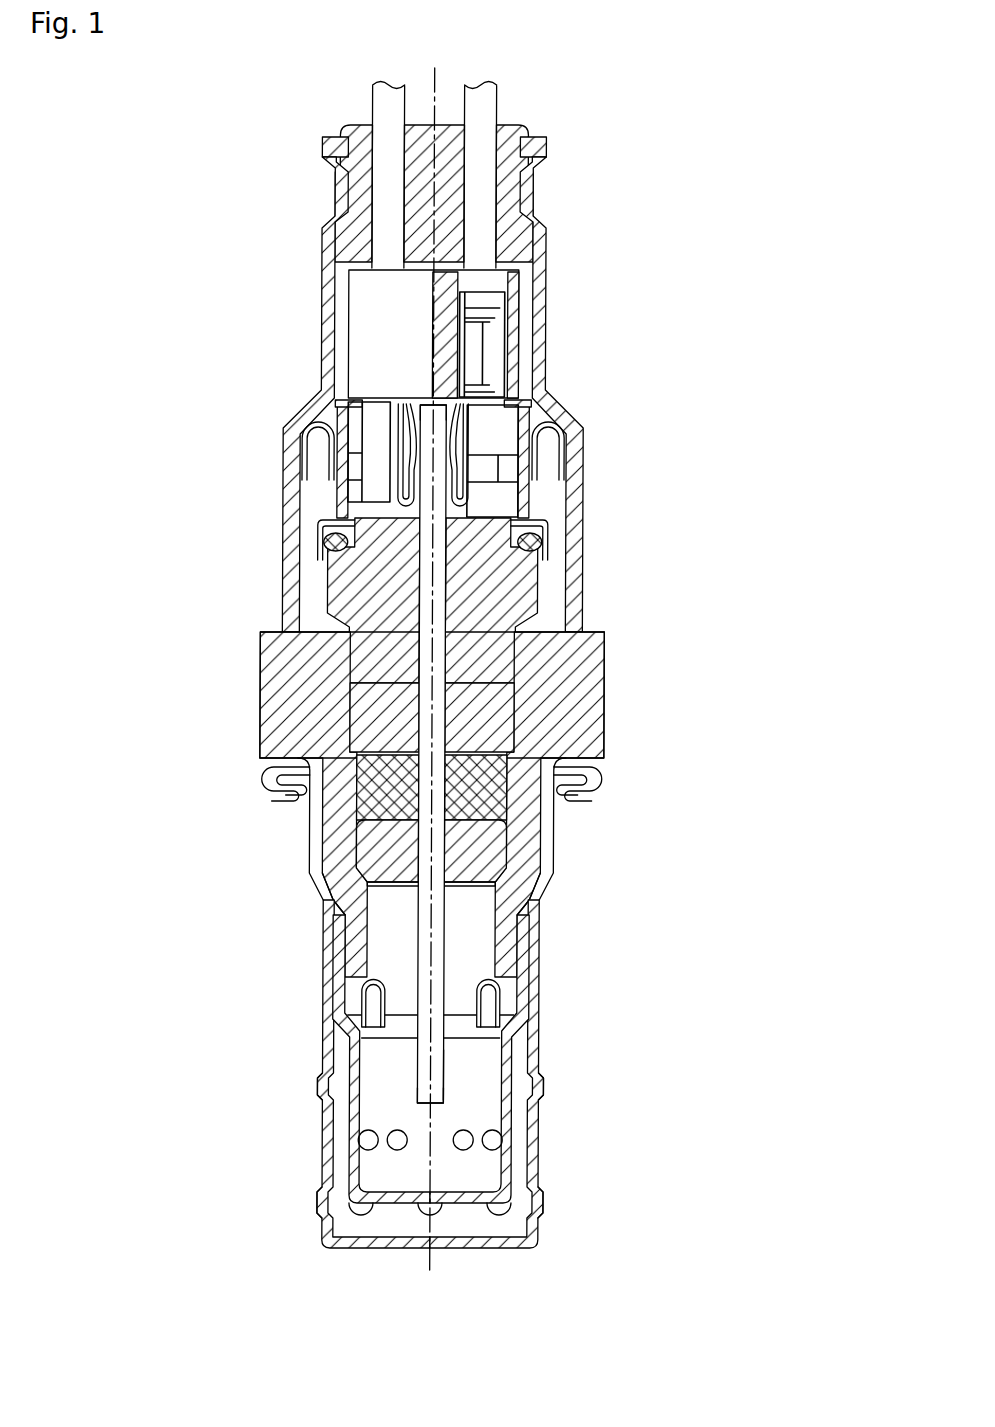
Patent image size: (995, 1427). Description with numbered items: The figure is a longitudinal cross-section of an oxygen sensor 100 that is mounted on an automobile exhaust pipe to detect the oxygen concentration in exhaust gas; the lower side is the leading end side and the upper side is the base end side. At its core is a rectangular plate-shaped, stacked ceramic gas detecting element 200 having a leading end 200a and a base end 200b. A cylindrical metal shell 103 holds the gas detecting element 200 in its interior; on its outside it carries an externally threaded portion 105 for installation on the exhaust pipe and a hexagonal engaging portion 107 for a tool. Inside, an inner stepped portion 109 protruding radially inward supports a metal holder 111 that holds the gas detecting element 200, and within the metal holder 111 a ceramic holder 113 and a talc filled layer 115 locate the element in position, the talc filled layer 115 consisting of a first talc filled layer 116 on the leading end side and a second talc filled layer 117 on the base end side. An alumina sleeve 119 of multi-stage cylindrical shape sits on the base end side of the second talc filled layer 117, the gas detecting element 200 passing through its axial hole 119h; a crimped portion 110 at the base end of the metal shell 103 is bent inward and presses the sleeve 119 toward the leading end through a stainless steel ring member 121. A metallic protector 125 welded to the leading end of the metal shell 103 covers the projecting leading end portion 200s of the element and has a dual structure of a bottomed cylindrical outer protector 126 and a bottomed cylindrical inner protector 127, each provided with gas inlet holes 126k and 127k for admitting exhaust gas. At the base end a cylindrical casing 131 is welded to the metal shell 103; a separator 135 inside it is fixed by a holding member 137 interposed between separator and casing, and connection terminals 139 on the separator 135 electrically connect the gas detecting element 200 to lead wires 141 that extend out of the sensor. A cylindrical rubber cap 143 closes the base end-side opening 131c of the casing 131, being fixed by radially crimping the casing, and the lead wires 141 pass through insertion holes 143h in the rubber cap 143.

The oxygen sensor 100 is at (193, 178).
The metal shell 103 is at (582, 663).
The externally threaded portion 105 is at (320, 830).
The hexagonal engaging portion 107 is at (278, 683).
The inner stepped portion 109 is at (358, 859).
The crimped portion 110 is at (520, 588).
The metal holder 111 is at (497, 884).
The ceramic holder 113 is at (498, 844).
The talc filled layer 115 is at (564, 751).
The first talc filled layer 116 is at (490, 800).
The second talc filled layer 117 is at (505, 728).
The sleeve 119 is at (525, 596).
The axial hole 119h is at (438, 572).
The ring member 121 is at (545, 545).
The protector 125 is at (450, 1074).
The outer protector 126 is at (530, 984).
The gas inlet holes 126k is at (535, 1202).
The inner protector 127 is at (512, 1062).
The gas inlet holes 127k is at (464, 1150).
The casing 131 is at (327, 273).
The base end-side opening 131c is at (345, 134).
The separator 135 is at (370, 358).
The holding member 137 is at (528, 432).
The connection terminals 139 is at (390, 443).
The lead wires 141 is at (380, 160).
The rubber cap 143 is at (512, 145).
The insertion holes 143h is at (380, 186).
The gas detecting element 200 is at (437, 938).
The leading end 200a is at (433, 1097).
The base end 200b is at (436, 400).
The leading end portion 200s is at (450, 1090).